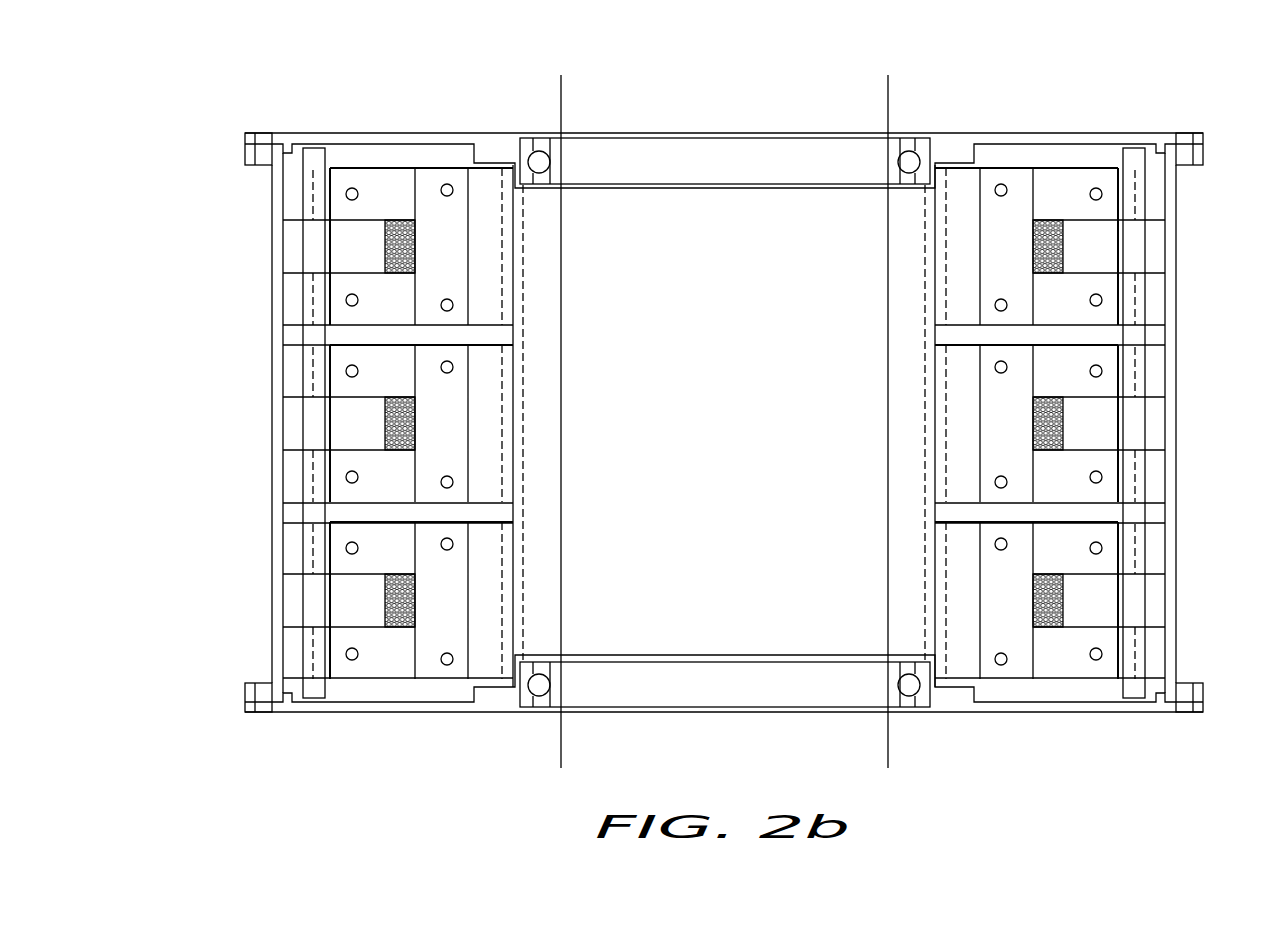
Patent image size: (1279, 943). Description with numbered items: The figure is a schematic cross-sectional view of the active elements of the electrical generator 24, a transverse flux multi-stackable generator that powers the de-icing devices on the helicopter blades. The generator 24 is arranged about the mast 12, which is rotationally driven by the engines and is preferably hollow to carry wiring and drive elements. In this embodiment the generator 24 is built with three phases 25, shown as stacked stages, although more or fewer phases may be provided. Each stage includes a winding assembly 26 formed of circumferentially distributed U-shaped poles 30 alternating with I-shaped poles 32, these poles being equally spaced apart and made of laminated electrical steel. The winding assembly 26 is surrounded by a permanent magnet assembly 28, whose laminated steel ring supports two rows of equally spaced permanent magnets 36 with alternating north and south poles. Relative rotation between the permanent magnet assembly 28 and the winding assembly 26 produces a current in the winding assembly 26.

The electrical generator 24 is at (196, 109).
The mast 12 is at (845, 112).
The phases 25 is at (227, 135).
The U-shaped poles 30 is at (1020, 192).
The winding assembly 26 is at (1072, 232).
The I-shaped poles 32 is at (1092, 262).
The permanent magnets 36 is at (1130, 468).
The permanent magnet assembly 28 is at (1160, 484).